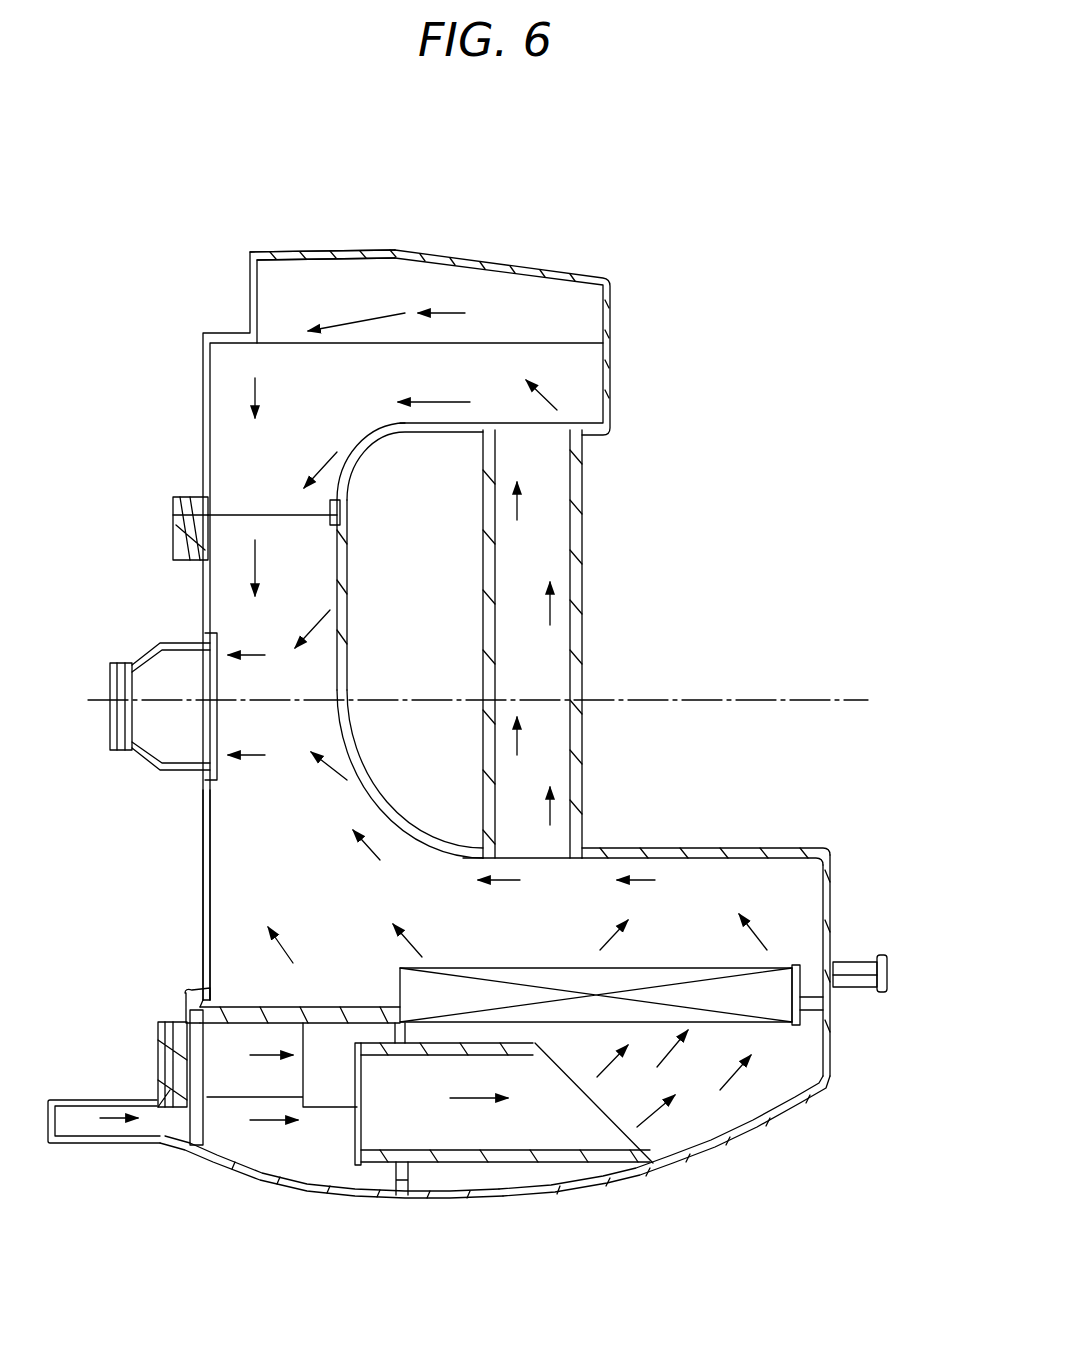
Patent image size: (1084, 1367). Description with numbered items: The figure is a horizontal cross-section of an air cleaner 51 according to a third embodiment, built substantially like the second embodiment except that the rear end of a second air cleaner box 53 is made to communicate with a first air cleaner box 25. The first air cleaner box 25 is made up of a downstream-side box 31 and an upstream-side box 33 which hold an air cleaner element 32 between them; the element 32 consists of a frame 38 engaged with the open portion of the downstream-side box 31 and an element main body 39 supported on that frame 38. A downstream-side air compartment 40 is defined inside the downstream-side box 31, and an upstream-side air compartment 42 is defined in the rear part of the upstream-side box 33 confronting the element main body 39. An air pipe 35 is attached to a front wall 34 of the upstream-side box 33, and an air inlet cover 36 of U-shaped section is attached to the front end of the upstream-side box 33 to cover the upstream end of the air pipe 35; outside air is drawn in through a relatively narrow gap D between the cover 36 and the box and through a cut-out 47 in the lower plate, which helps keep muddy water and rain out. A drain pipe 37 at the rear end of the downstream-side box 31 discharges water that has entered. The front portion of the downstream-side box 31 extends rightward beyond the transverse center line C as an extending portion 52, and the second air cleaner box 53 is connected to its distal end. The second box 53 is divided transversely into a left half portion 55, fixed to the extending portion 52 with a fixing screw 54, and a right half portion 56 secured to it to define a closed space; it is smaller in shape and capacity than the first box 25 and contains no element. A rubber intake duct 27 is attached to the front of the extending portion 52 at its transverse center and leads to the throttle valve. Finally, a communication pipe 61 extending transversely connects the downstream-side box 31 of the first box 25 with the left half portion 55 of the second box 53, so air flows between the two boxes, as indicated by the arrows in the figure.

The air cleaner 51 is at (176, 313).
The right half portion 56 is at (432, 257).
The second air cleaner box 53 is at (550, 270).
The fixing screw 54 is at (187, 496).
The left half portion 55 is at (425, 433).
The communication pipe 61 is at (582, 543).
The extending portion 52 is at (348, 600).
The intake duct 27 is at (152, 772).
The downstream-side air compartment 40 is at (232, 880).
The frame 38 is at (207, 988).
The downstream-side box 31 is at (735, 848).
The air cleaner element 32 is at (634, 958).
The element main body 39 is at (688, 975).
The first air cleaner box 25 is at (555, 1019).
The drain pipe 37 is at (858, 992).
The cut-out 47 is at (208, 1088).
The air inlet cover 36 is at (307, 1198).
The front wall 34 is at (397, 1196).
The air pipe 35 is at (505, 1166).
The upstream-side air compartment 42 is at (680, 1138).
The upstream-side box 33 is at (765, 1132).
The gap D is at (153, 1127).
The center line C is at (716, 695).